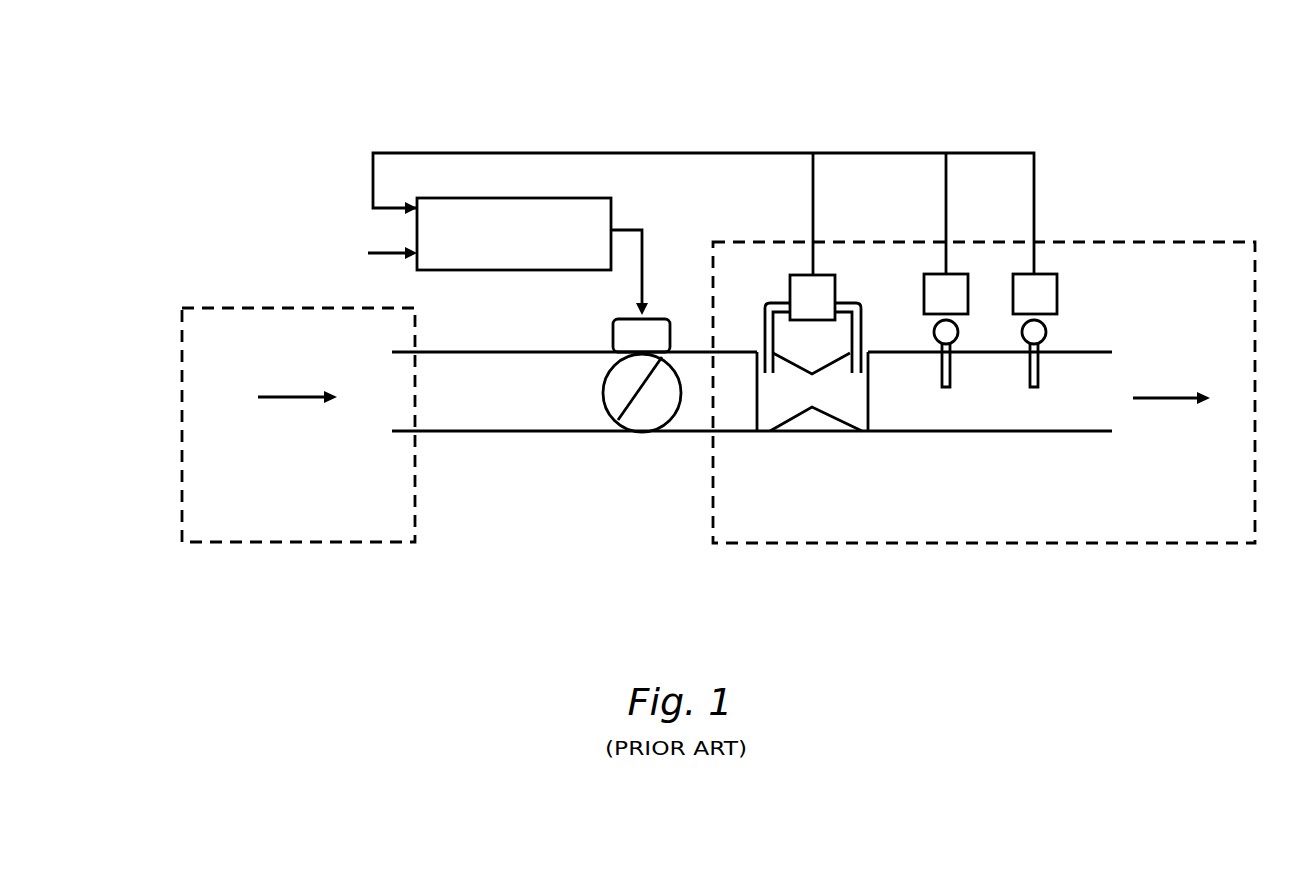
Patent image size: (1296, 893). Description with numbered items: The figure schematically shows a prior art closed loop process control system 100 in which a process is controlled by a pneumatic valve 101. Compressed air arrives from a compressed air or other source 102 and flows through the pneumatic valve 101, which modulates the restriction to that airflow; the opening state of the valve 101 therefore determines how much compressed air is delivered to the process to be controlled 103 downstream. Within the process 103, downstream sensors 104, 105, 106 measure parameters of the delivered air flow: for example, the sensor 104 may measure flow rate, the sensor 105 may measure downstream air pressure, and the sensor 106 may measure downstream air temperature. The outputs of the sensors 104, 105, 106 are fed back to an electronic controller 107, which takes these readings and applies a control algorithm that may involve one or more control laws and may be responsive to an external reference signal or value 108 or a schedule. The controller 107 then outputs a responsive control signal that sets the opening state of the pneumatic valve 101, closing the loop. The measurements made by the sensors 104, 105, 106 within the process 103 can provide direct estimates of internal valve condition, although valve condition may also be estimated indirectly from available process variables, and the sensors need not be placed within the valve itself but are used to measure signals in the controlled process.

The closed loop process control system 100 is at (646, 92).
The pneumatic valve 101 is at (645, 432).
The compressed air source 102 is at (292, 545).
The process to be controlled 103 is at (965, 545).
The flow rate sensor 104 is at (790, 300).
The pressure sensor 105 is at (924, 295).
The temperature sensor 106 is at (1013, 295).
The electronic controller 107 is at (538, 272).
The reference signal 108 is at (294, 210).